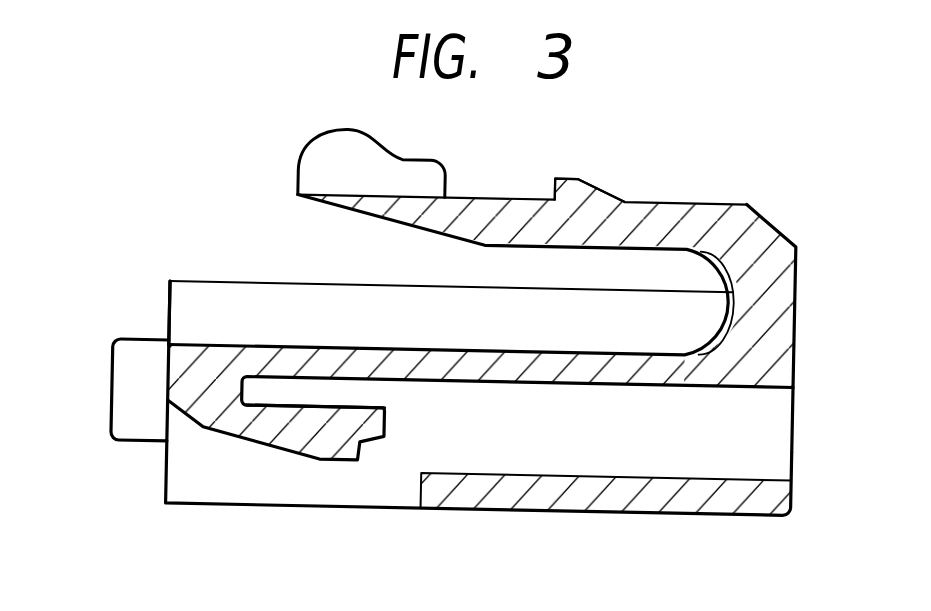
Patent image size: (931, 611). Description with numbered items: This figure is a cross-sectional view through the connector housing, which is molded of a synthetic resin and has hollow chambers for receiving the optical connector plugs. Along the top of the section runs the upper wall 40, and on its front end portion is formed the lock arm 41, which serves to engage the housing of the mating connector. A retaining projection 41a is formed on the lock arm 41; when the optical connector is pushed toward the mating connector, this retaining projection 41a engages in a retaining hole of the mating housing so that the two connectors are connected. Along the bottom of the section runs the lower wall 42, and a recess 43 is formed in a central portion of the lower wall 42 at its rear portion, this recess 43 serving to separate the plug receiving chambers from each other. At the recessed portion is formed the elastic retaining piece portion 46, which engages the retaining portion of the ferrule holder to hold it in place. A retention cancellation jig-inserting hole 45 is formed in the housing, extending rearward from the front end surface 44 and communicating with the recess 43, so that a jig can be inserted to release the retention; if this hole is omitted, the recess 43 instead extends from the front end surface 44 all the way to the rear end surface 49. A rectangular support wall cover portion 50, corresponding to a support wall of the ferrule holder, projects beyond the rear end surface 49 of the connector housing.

The upper wall 40 is at (226, 283).
The lock arm 41 is at (493, 197).
The retaining projection 41a is at (585, 192).
The lower wall 42 is at (565, 505).
The recess 43 is at (190, 470).
The front end surface 44 is at (784, 323).
The retention cancellation jig-inserting hole 45 is at (777, 443).
The elastic retaining piece portion 46 is at (300, 445).
The rear end surface 49 is at (168, 317).
The support wall cover portion 50 is at (126, 393).